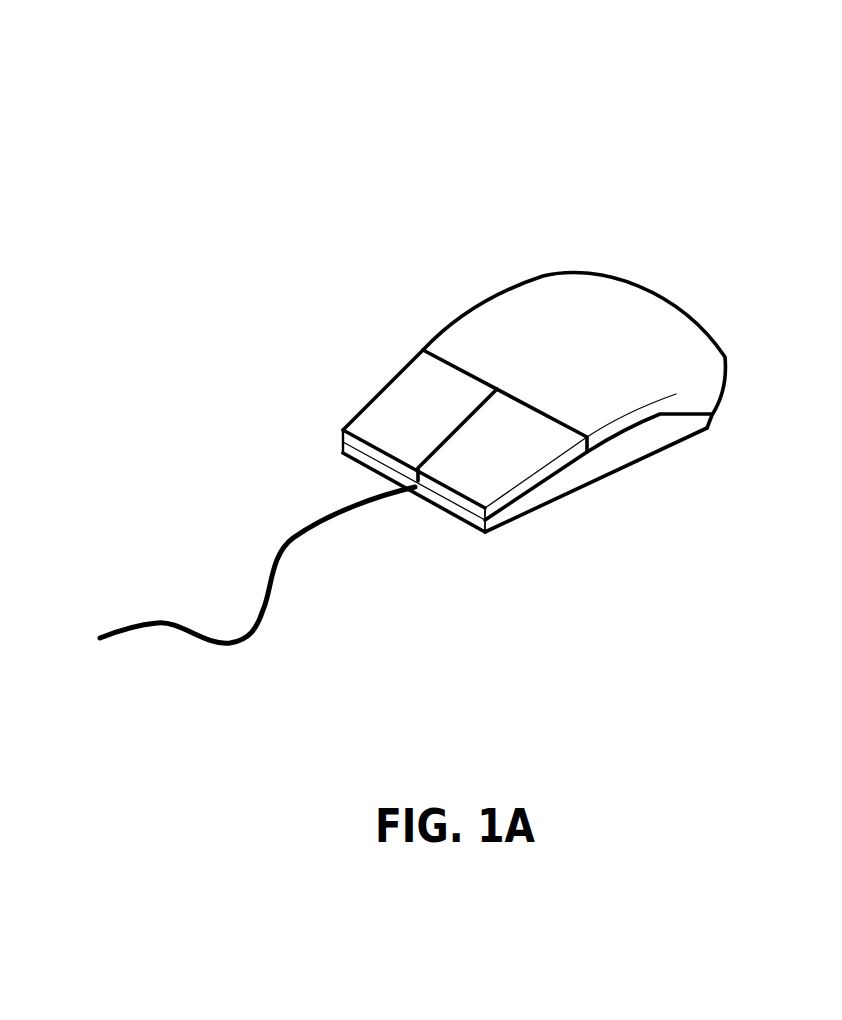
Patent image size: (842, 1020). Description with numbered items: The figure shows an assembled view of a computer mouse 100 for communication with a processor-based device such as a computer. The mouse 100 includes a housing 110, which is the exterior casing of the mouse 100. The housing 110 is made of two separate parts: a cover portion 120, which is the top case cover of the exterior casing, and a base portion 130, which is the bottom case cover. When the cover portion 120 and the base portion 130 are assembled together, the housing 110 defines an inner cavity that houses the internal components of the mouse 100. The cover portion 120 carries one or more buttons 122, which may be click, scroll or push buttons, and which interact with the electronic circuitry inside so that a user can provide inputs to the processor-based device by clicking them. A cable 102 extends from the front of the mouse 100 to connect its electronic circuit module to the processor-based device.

The computer mouse 100 is at (182, 126).
The cable 102 is at (290, 542).
The housing 110 is at (437, 335).
The cover portion 120 is at (567, 315).
The buttons 122 is at (402, 407).
The base portion 130 is at (610, 453).